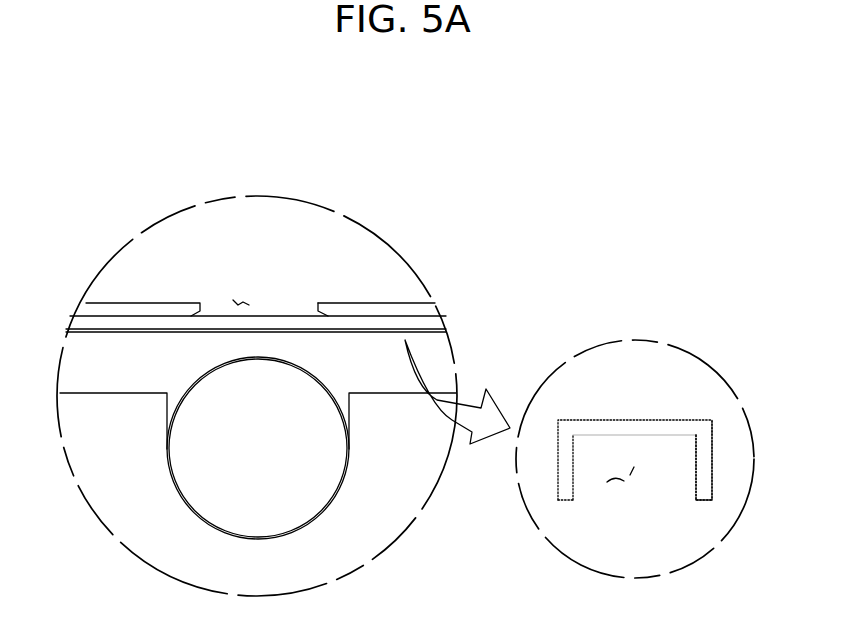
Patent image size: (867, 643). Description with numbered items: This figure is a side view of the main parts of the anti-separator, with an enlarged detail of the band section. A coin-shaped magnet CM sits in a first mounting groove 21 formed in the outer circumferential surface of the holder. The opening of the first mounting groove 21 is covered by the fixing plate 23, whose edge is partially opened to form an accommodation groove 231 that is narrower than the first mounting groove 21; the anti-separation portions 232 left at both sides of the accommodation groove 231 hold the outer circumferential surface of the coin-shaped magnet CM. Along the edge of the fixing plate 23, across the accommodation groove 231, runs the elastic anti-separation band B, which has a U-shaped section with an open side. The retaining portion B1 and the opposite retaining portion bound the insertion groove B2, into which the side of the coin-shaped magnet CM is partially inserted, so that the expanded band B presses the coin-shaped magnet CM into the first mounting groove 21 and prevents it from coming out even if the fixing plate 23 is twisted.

The fixing plate 23 is at (112, 303).
The accommodation groove 231 is at (241, 301).
The anti-separation portion 232 is at (190, 303).
The anti-separation band B is at (278, 327).
The bracket leg B1 is at (710, 473).
The insertion groove B2 is at (622, 480).
The first mounting groove 21 is at (325, 513).
The coin-shaped magnet CM is at (213, 483).